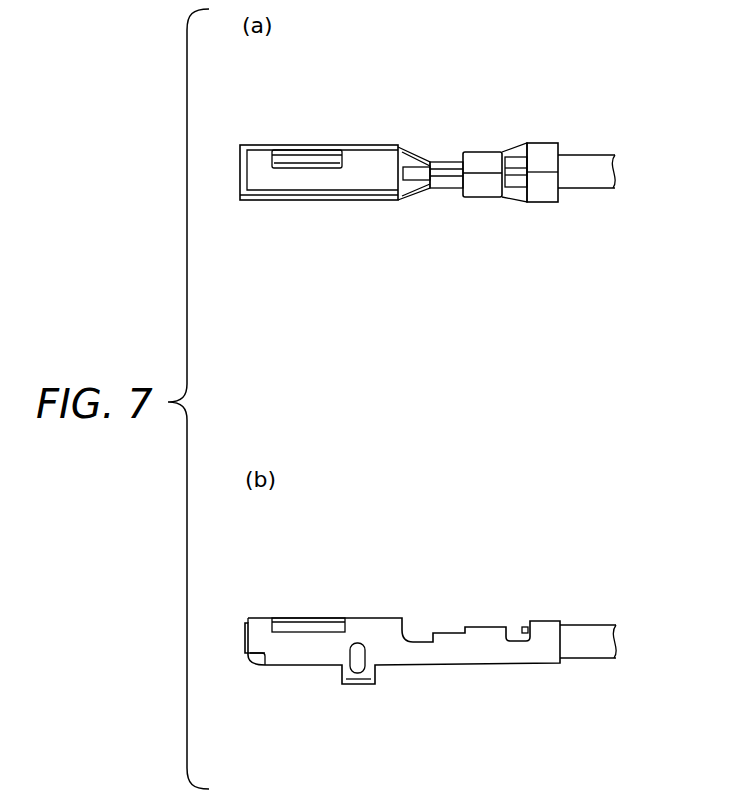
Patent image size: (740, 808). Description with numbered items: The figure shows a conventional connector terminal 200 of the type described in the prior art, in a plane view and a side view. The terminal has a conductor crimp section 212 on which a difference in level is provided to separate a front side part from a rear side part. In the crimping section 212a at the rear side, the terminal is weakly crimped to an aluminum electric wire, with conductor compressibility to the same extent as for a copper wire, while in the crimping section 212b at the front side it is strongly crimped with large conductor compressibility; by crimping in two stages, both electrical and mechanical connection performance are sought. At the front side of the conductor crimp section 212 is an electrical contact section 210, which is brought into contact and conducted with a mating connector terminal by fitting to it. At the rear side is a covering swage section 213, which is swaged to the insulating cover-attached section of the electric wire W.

The connector terminal 200 is at (360, 126).
The electrical contact section 210 is at (297, 200).
The conductor crimp section 212 is at (533, 272).
The crimping section 212a is at (483, 198).
The crimping section 212b is at (448, 189).
The covering swage section 213 is at (552, 143).
The electric wire W is at (587, 190).